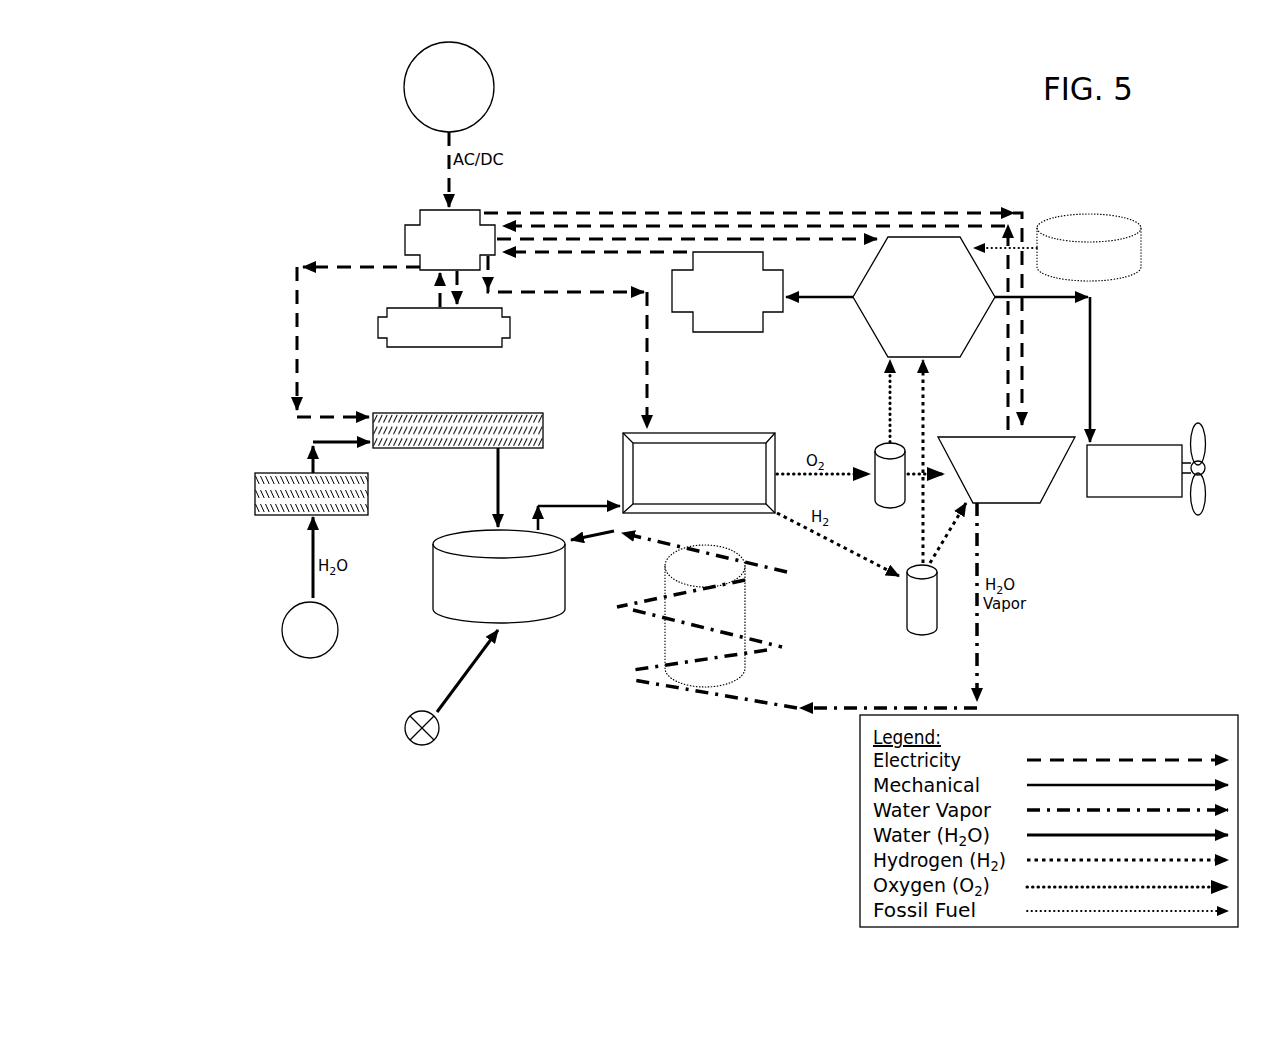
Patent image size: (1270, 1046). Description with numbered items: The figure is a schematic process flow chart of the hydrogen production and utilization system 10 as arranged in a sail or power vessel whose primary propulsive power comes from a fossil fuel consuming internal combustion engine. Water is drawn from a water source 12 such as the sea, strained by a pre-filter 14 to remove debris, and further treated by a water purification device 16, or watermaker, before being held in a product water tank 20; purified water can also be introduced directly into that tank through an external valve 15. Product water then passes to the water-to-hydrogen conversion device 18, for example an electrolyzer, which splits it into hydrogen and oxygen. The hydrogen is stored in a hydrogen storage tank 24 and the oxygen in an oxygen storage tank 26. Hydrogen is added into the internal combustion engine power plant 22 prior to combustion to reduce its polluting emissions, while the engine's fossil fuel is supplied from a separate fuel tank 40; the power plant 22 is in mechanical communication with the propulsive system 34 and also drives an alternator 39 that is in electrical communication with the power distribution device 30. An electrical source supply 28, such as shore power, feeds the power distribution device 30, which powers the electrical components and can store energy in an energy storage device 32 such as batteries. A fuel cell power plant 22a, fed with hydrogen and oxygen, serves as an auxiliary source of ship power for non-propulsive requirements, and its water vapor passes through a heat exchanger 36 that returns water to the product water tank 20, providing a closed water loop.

The hydrogen production and utilization system 10 is at (702, 173).
The water source 12 is at (282, 629).
The pre-filter 14 is at (255, 493).
The external valve 15 is at (413, 744).
The water purification device 16 is at (545, 440).
The water-to-hydrogen conversion device 18 is at (623, 487).
The product water tank 20 is at (538, 625).
The internal combustion engine power plant 22 is at (853, 297).
The fuel cell power plant 22a is at (962, 437).
The hydrogen storage tank 24 is at (917, 635).
The oxygen storage tank 26 is at (880, 509).
The electrical source supply 28 is at (404, 92).
The power distribution device 30 is at (404, 238).
The energy storage device 32 is at (473, 348).
The propulsive system 34 is at (1206, 432).
The heat exchanger 36 is at (790, 642).
The alternator 39 is at (708, 333).
The fuel tank 40 is at (1142, 247).